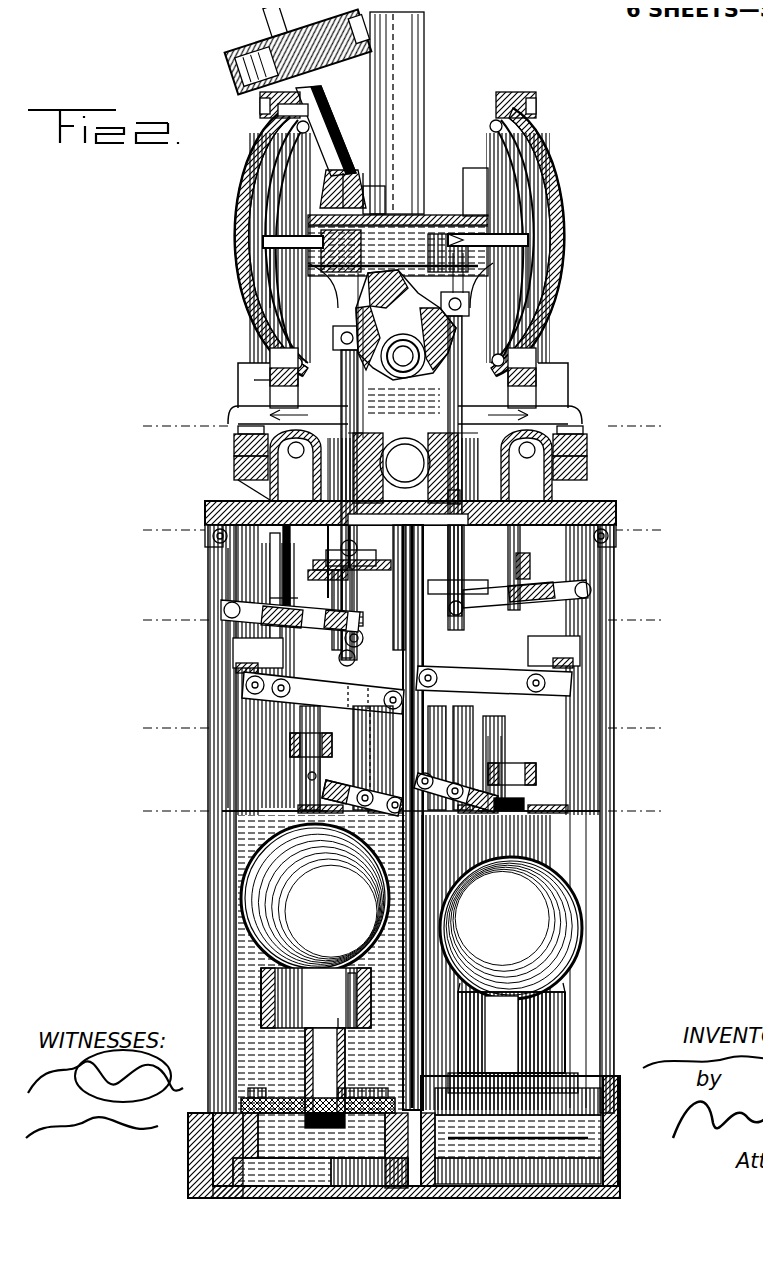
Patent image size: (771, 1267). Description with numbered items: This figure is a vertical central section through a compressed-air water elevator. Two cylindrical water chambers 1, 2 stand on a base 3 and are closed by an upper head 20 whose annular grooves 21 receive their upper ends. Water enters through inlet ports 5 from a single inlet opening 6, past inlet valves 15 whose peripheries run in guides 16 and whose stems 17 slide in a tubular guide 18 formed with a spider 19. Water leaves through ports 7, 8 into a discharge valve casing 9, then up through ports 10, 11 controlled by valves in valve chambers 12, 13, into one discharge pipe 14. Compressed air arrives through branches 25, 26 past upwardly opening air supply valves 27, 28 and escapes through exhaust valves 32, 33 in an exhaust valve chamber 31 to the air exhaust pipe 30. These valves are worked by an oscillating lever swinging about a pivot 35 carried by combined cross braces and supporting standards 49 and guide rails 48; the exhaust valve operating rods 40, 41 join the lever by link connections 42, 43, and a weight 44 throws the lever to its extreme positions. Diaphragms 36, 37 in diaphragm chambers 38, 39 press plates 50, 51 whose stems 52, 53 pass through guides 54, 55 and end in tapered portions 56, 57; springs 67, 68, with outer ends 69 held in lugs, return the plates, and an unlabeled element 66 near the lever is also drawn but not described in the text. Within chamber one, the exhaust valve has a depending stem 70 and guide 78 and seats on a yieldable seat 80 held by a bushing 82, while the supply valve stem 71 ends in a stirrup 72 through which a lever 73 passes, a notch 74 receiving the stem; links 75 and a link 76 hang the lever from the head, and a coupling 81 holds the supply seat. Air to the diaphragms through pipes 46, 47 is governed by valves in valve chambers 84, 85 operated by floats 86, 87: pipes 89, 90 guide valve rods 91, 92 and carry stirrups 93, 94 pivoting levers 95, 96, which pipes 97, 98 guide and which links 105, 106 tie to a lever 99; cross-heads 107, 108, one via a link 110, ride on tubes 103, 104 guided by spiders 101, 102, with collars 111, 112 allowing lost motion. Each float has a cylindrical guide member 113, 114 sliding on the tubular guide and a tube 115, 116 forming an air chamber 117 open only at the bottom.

The water chamber 1 is at (200, 778).
The water chamber 2 is at (606, 778).
The base 3 is at (612, 1140).
The inlet ports 5 is at (630, 1162).
The inlet opening 6 is at (405, 531).
The port 7 is at (405, 621).
The port 8 is at (408, 729).
The discharge valve casing 9 is at (406, 810).
The port 10 is at (205, 1078).
The port 11 is at (240, 1118).
The valve chamber 12 is at (302, 766).
The valve chamber 13 is at (605, 1145).
The discharge pipe 14 is at (615, 1118).
The inlet valve 15 is at (300, 1070).
The guides 16 is at (385, 1110).
The stem 17 is at (305, 1050).
The tubular guide 18 is at (290, 1088).
The spider 19 is at (350, 1098).
The upper head 20 is at (386, 570).
The annular grooves 21 is at (192, 528).
The branch 25 is at (262, 406).
The branch 26 is at (562, 410).
The air supply valve 27 is at (275, 486).
The air supply valve 28 is at (530, 484).
The air exhaust pipe 30 is at (415, 80).
The exhaust valve chamber 31 is at (579, 460).
The exhaust valve 32 is at (330, 550).
The exhaust valve 33 is at (470, 548).
The pivot 35 is at (400, 352).
The diaphragm 36 is at (250, 140).
The diaphragm 37 is at (528, 142).
The diaphragm chamber 38 is at (258, 170).
The diaphragm chamber 39 is at (515, 168).
The operating rod 40 is at (258, 395).
The operating rod 41 is at (540, 392).
The link connection 42 is at (262, 357).
The link connection 43 is at (462, 295).
The weight 44 is at (228, 76).
The pipe 46 is at (246, 373).
The pipe 47 is at (530, 356).
The guide rails 48 is at (440, 214).
The combined cross braces and supporting standards 49 is at (330, 290).
The plate 50 is at (262, 248).
The plate 51 is at (522, 250).
The stem 52 is at (250, 234).
The stem 53 is at (520, 232).
The guide 54 is at (340, 185).
The guide 55 is at (465, 205).
The tapered portion 56 is at (312, 248).
The tapered portion 57 is at (485, 245).
The block 66 is at (352, 205).
The spring 67 is at (260, 200).
The spring 68 is at (540, 195).
The spring outer ends 69 is at (300, 118).
The depending stem 70 is at (344, 605).
The depending stem 71 is at (290, 550).
The stirrup 72 is at (320, 587).
The lever 73 is at (330, 615).
The notch 74 is at (252, 592).
The links 75 is at (338, 635).
The link 76 is at (222, 567).
The guide 78 is at (331, 610).
The seat 80 is at (440, 490).
The coupling 81 is at (226, 462).
The bushing 82 is at (380, 452).
The valve chamber 84 is at (226, 440).
The valve chamber 85 is at (579, 440).
The float 86 is at (315, 898).
The float 87 is at (511, 928).
The pipe 89 is at (230, 590).
The pipe 90 is at (565, 572).
The valve rod 91 is at (236, 672).
The valve rod 92 is at (565, 666).
The stirrup 93 is at (228, 645).
The stirrup 94 is at (562, 640).
The lever 95 is at (323, 693).
The lever 96 is at (494, 681).
The pipe 97 is at (350, 708).
The pipe 98 is at (470, 700).
The lever 99 is at (350, 782).
The spider 101 is at (212, 818).
The spider 102 is at (605, 818).
The tube 103 is at (297, 782).
The tube 104 is at (508, 783).
The link 105 is at (385, 735).
The link 106 is at (438, 700).
The cross-head 107 is at (283, 745).
The cross-head 108 is at (530, 764).
The link 110 is at (470, 750).
The collar 111 is at (294, 706).
The collar 112 is at (510, 795).
The cylindrical guide member 113 is at (288, 994).
The cylindrical guide member 114 is at (500, 1040).
The tube 115 is at (255, 965).
The tube 116 is at (565, 1000).
The air chamber 117 is at (345, 968).